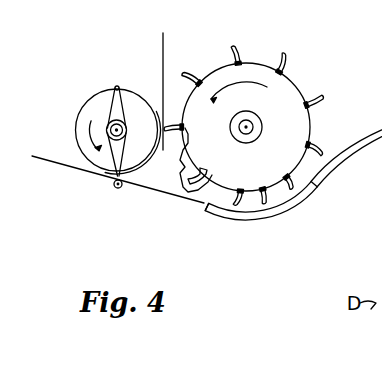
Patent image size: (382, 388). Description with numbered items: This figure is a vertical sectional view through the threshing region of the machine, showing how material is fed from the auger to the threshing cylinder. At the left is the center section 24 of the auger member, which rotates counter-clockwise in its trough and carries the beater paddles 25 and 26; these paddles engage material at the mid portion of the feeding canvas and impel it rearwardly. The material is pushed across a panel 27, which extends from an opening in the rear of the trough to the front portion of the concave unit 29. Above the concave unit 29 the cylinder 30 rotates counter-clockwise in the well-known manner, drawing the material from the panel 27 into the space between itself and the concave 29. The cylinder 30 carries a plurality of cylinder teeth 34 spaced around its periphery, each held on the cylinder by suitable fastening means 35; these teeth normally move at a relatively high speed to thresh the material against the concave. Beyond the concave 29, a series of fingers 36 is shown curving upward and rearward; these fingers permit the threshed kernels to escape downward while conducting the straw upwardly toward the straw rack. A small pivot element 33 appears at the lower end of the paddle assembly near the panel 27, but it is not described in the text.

The center section 24 is at (97, 96).
The beater paddle 25 is at (117, 102).
The beater paddle 26 is at (116, 160).
The panel 27 is at (204, 209).
The concave unit 29 is at (232, 218).
The cylinder 30 is at (243, 129).
The pivot pin 33 is at (114, 188).
The cylinder teeth 34 is at (186, 72).
The fastening means 35 is at (186, 160).
The fingers 36 is at (360, 143).